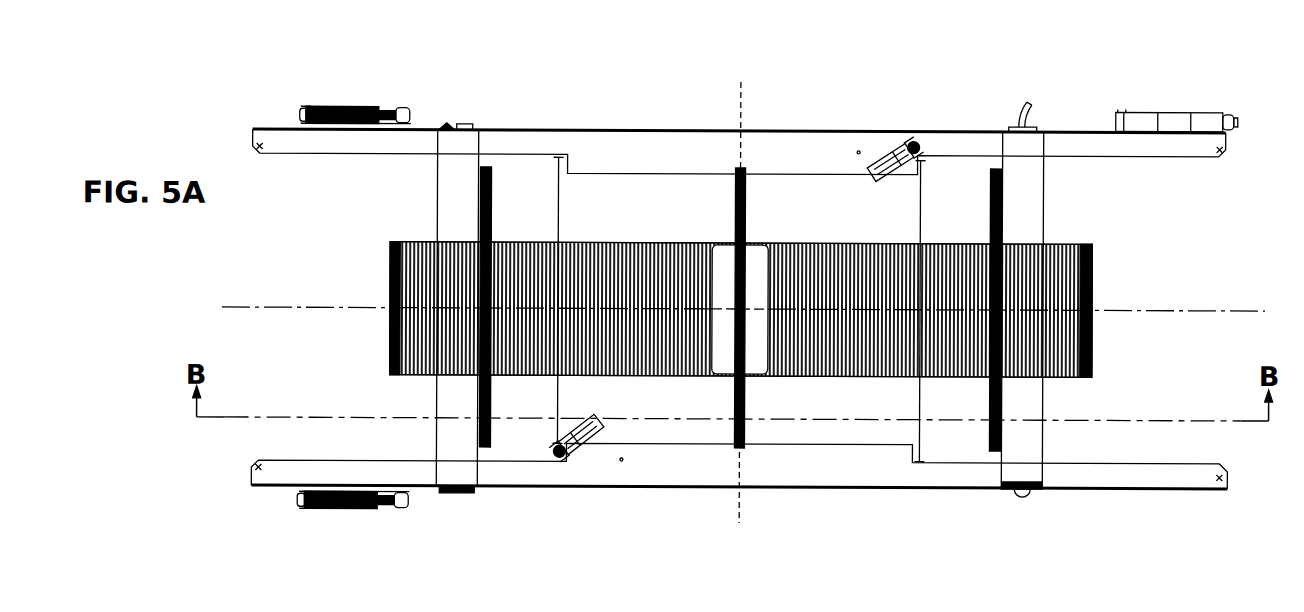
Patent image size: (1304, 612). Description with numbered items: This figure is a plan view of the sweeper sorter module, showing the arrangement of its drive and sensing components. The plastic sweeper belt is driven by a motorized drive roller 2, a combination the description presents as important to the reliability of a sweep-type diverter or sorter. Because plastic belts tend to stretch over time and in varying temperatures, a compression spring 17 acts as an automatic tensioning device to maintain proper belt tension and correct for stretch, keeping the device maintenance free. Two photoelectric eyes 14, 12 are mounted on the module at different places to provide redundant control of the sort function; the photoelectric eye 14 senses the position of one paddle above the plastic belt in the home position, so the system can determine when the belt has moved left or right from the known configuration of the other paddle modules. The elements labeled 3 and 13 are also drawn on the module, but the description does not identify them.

The motorized drive roller 2 is at (1028, 198).
The support post 3 is at (450, 440).
The photoelectric eye 12 is at (573, 463).
The actuator 13 is at (1203, 117).
The photoelectric eye 14 is at (905, 140).
The compression spring 17 is at (338, 508).